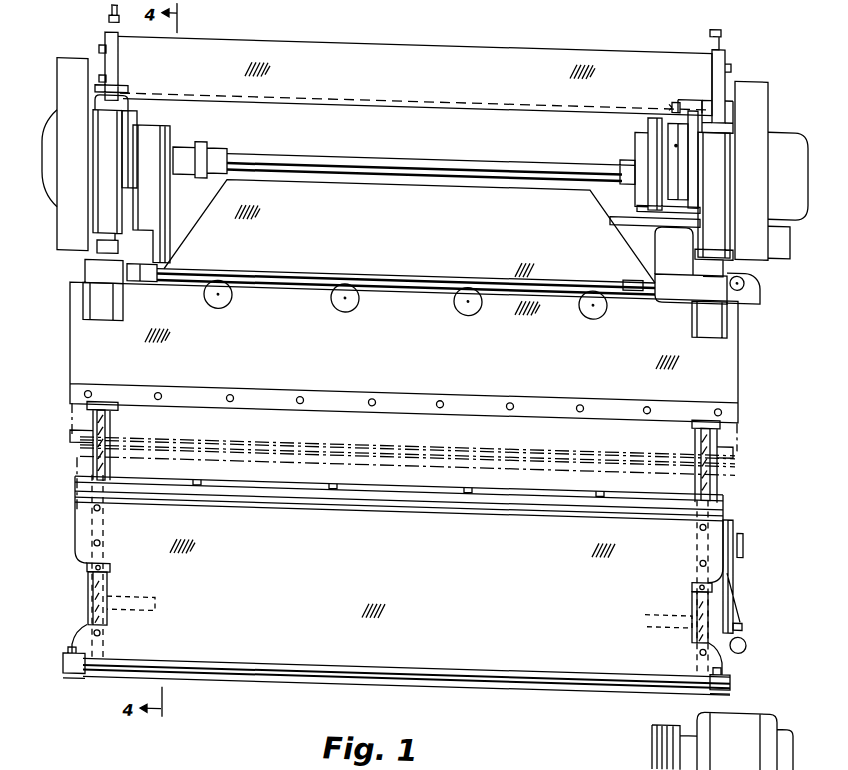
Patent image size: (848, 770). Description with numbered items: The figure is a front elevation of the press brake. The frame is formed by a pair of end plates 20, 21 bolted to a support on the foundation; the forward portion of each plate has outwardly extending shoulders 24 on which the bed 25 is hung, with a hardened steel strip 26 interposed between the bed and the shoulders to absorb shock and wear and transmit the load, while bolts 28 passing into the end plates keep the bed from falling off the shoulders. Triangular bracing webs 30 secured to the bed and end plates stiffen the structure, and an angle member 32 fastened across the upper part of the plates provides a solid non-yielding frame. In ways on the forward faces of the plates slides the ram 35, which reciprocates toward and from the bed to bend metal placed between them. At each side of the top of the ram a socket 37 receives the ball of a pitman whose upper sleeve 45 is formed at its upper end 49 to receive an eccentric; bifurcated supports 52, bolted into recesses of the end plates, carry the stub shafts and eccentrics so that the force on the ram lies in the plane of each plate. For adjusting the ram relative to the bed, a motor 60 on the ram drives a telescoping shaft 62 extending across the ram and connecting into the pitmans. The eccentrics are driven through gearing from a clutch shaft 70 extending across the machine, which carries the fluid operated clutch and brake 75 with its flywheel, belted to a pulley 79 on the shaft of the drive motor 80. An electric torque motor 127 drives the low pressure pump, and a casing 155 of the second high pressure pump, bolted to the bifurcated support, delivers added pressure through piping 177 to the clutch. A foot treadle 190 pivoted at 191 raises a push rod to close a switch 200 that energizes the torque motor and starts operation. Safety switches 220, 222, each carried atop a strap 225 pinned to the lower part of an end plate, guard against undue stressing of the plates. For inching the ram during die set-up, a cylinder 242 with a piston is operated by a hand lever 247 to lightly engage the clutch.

The end plate 20 is at (722, 59).
The end plate 21 is at (112, 60).
The outwardly extending shoulders 24 is at (88, 579).
The bed 25 is at (397, 575).
The strip 26 is at (110, 561).
The bolts 28 is at (94, 506).
The bracing webs 30 is at (136, 606).
The angle member 32 is at (415, 75).
The ram 35 is at (404, 349).
The socket 37 is at (90, 298).
The upper sleeve 45 is at (413, 194).
The upper end of sleeve 49 is at (110, 118).
The bifurcated supports 52 is at (137, 112).
The motor 60 is at (690, 265).
The telescoping shaft 62 is at (419, 256).
The clutch shaft 70 is at (385, 147).
The fluid operated clutch and brake 75 is at (633, 132).
The pulley 79 is at (652, 712).
The motor 80 is at (775, 224).
The electric torque motor 127 is at (761, 273).
The casing 155 is at (678, 128).
The piping 177 is at (698, 82).
The foot treadle 190 is at (65, 660).
The pivot 191 is at (457, 656).
The switch 200 is at (742, 605).
The safety switch 220 is at (721, 26).
The safety switch 222 is at (108, 13).
The strap 225 is at (112, 420).
The cylinder 242 is at (746, 624).
The hand lever 247 is at (740, 540).